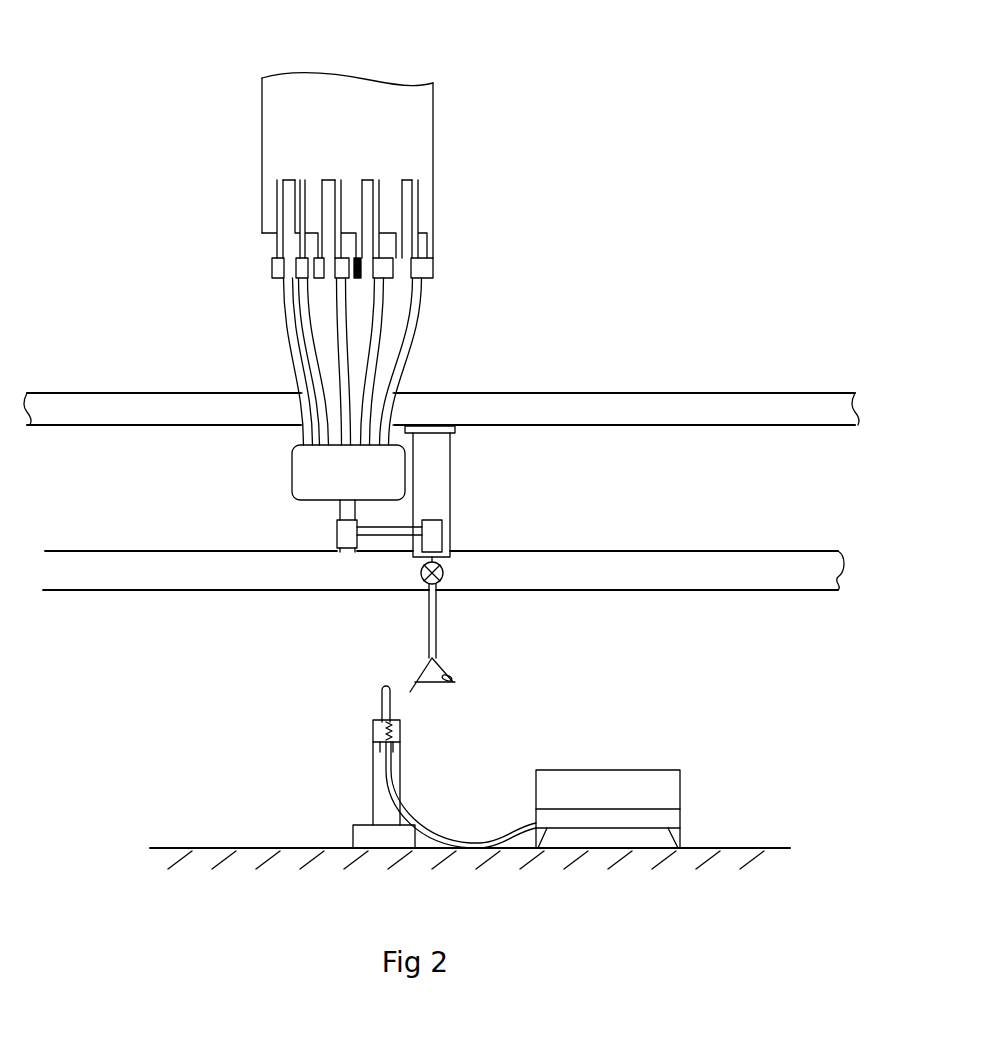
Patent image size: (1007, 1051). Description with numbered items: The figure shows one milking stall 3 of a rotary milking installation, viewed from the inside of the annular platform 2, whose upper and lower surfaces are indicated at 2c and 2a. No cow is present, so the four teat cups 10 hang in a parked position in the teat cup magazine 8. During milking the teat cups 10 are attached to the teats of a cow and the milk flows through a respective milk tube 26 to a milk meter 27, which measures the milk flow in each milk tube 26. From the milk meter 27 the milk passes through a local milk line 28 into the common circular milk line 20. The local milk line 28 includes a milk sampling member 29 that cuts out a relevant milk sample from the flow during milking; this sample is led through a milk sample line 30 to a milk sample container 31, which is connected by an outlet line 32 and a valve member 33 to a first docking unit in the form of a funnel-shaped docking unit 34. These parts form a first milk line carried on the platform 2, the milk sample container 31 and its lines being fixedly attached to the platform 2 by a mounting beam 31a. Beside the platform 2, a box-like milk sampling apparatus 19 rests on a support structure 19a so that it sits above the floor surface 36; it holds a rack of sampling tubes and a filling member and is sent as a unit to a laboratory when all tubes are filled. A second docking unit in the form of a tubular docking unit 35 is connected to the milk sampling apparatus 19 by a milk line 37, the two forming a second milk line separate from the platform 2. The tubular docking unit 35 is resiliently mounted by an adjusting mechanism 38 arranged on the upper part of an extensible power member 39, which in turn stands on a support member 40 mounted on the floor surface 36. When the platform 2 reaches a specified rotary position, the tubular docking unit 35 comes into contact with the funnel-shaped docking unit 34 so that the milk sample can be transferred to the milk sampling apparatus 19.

The annular platform 2 is at (618, 393).
The lower surface of plate 2a is at (688, 410).
The upper surface of plate 2c is at (550, 398).
The milking stall 3 is at (531, 231).
The teat cup magazine 8 is at (395, 100).
The teat cups 10 is at (275, 270).
The milk sampling apparatus 19 is at (641, 785).
The support structure 19a is at (668, 820).
The common circular milk line 20 is at (152, 573).
The milk tube 26 is at (297, 338).
The milk meter 27 is at (312, 472).
The local milk line 28 is at (347, 510).
The milk sampling member 29 is at (347, 533).
The milk sample line 30 is at (388, 535).
The milk sample container 31 is at (432, 533).
The mounting beam 31a is at (432, 465).
The outlet line 32 is at (437, 607).
The valve member 33 is at (443, 573).
The funnel-shaped docking unit 34 is at (440, 675).
The tubular docking unit 35 is at (380, 700).
The floor surface 36 is at (210, 846).
The milk line 37 is at (398, 799).
The adjusting mechanism 38 is at (373, 735).
The extensible power member 39 is at (378, 786).
The support member 40 is at (373, 840).